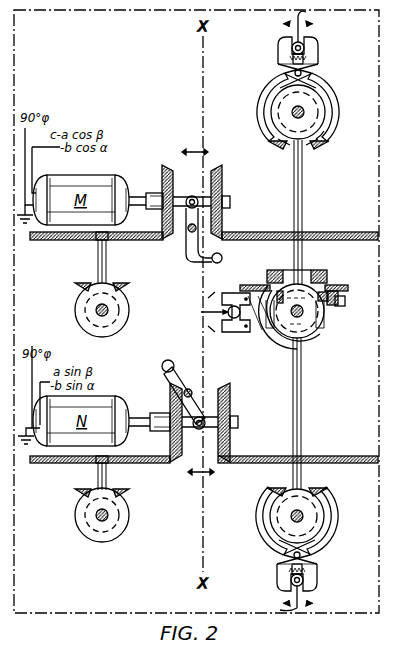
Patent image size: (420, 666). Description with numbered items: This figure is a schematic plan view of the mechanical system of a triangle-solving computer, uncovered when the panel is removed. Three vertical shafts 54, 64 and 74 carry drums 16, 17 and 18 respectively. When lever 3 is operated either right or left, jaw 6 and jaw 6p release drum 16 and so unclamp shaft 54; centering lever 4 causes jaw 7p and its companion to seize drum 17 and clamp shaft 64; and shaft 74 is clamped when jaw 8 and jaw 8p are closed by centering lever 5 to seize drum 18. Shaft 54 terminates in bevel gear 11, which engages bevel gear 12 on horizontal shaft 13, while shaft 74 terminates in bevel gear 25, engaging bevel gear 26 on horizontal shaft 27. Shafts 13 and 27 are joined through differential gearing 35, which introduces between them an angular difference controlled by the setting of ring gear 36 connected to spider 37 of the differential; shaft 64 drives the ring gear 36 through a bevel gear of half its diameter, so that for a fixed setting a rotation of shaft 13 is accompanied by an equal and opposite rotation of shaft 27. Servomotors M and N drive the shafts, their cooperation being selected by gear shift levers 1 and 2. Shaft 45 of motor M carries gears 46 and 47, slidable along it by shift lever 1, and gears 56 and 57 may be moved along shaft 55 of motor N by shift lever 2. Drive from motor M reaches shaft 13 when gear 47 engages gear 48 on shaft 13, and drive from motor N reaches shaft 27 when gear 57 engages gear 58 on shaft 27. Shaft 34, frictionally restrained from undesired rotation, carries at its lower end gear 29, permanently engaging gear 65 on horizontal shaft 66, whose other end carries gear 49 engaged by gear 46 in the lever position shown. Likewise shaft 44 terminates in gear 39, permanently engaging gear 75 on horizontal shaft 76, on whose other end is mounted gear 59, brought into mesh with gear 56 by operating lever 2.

The gear shift lever 1 is at (210, 262).
The gear shift lever 2 is at (168, 360).
The lever 3 is at (298, 21).
The centering lever 4 is at (201, 311).
The centering lever 5 is at (285, 598).
The jaw 6 is at (326, 88).
The jaw 6p is at (270, 90).
The jaw 7p is at (283, 342).
The jaw 8 is at (328, 528).
The jaw 8p is at (278, 548).
The bevel gear 11 is at (320, 133).
The bevel gear 12 is at (315, 147).
The horizontal shaft 13 is at (303, 210).
The drum 16 is at (271, 104).
The drum 17 is at (317, 328).
The drum 18 is at (308, 556).
The bevel gear 25 is at (322, 510).
The bevel gear 26 is at (310, 491).
The horizontal shaft 27 is at (302, 413).
The gear 29 is at (77, 297).
The shaft 34 is at (96, 311).
The differential gearing 35 is at (301, 289).
The ring gear 36 is at (335, 291).
The spider 37 is at (345, 302).
The gear 39 is at (78, 500).
The shaft 44 is at (96, 515).
The shaft of motor M 45 is at (136, 196).
The gear 46 is at (167, 165).
The gear 47 is at (213, 165).
The gear 48 is at (268, 232).
The gear 49 is at (112, 240).
The shaft 54 is at (305, 110).
The shaft of motor N 55 is at (144, 416).
The gear 56 is at (168, 386).
The gear 57 is at (226, 392).
The gear 58 is at (242, 456).
The gear 59 is at (152, 463).
The shaft 64 is at (303, 312).
The gear 65 is at (88, 283).
The horizontal shaft 66 is at (97, 251).
The shaft 74 is at (303, 520).
The gear 75 is at (124, 492).
The horizontal shaft 76 is at (108, 478).